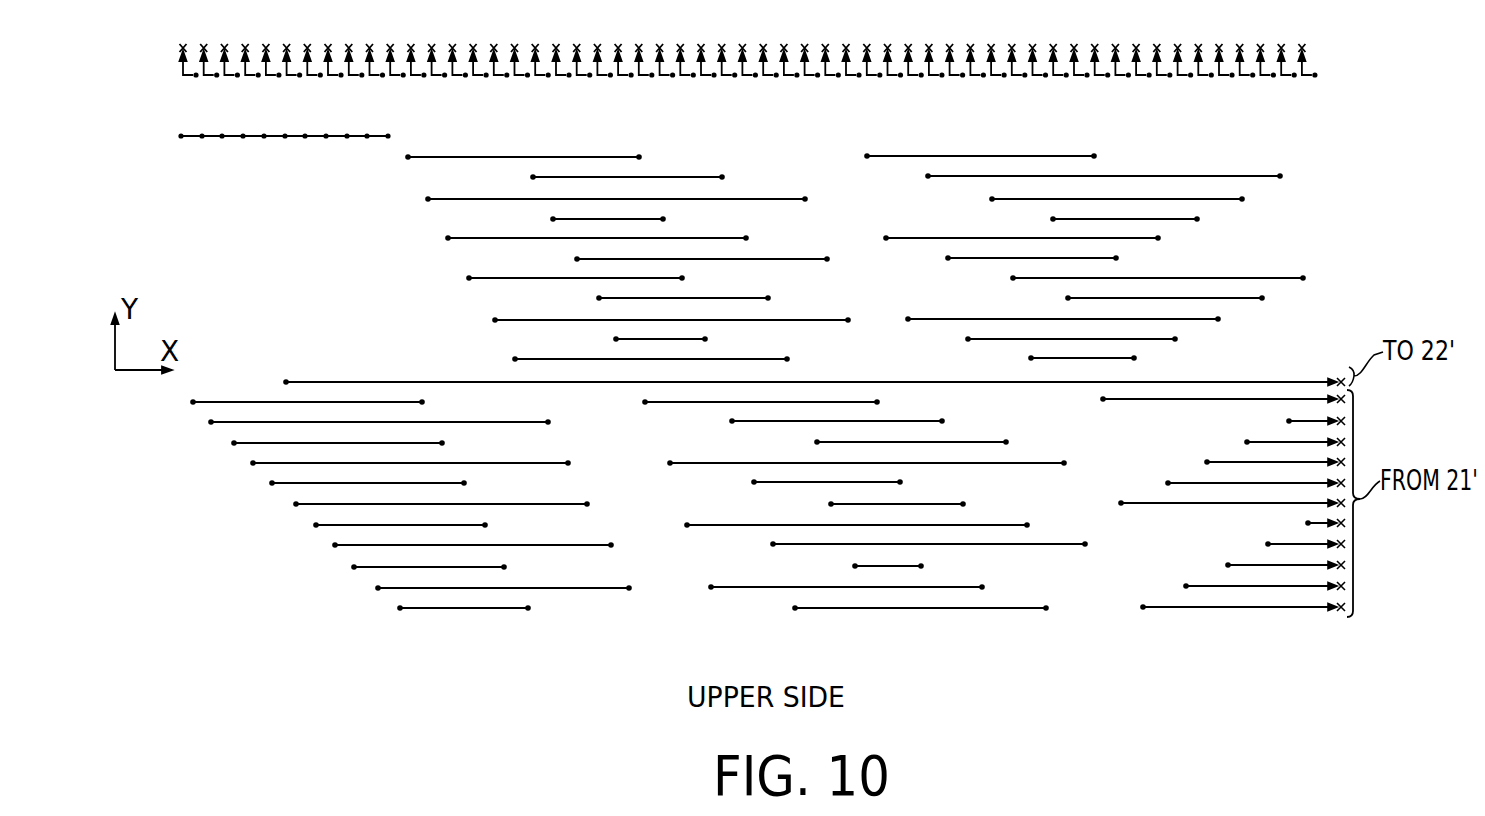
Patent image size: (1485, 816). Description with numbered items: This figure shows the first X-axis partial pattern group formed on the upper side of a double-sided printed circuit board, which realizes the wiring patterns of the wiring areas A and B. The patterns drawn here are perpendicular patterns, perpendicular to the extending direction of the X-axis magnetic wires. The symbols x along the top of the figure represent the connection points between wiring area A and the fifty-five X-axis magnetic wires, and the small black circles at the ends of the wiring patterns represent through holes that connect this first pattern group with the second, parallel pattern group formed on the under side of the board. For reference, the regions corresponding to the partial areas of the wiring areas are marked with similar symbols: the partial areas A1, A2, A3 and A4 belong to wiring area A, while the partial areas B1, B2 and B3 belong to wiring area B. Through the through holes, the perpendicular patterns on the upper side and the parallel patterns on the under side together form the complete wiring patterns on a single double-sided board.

The partial area B1 is at (315, 138).
The partial area B2 is at (562, 156).
The partial area B3 is at (814, 369).
The partial area A1 is at (499, 614).
The partial area A2 is at (907, 614).
The partial area A3 is at (1213, 614).
The partial area A4 is at (1371, 503).